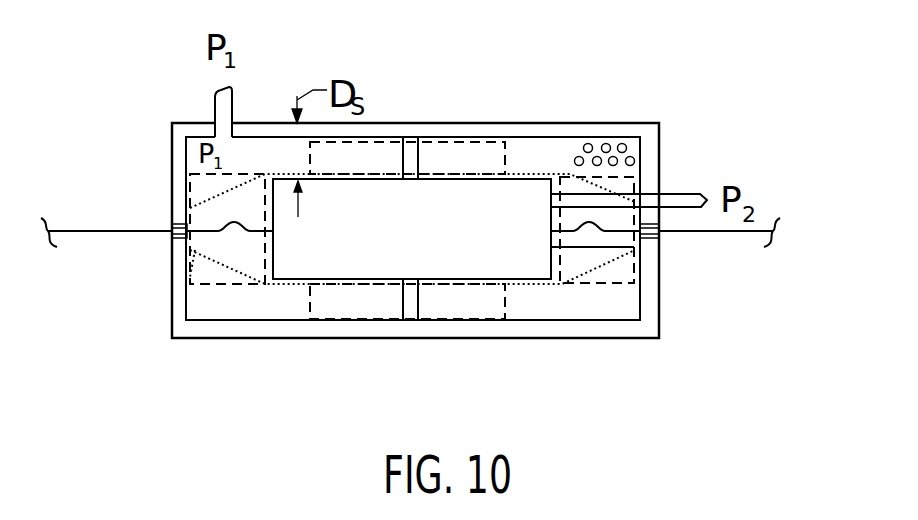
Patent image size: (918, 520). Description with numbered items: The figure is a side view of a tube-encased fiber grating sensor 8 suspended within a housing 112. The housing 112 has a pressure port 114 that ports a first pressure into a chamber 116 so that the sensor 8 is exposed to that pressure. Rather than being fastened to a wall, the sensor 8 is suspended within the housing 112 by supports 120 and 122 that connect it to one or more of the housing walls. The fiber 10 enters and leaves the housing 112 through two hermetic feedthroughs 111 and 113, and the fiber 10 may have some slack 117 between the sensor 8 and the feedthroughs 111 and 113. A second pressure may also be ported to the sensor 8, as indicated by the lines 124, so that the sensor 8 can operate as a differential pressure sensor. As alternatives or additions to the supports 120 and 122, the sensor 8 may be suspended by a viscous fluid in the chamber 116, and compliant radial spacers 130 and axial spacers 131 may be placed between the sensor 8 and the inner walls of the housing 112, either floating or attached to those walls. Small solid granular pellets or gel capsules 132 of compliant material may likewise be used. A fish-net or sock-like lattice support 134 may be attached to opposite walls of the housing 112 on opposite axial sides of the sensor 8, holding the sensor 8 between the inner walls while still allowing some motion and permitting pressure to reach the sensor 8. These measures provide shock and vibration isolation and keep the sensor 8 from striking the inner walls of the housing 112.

The sensor 8 is at (477, 247).
The fiber 10 is at (92, 231).
The hermetic feedthrough 111 is at (158, 233).
The housing 112 is at (163, 107).
The hermetic feedthrough 113 is at (657, 237).
The pressure port 114 is at (228, 110).
The chamber 116 is at (245, 305).
The slack 117 is at (234, 222).
The support 120 is at (592, 247).
The support 122 is at (408, 153).
The lines 124 is at (673, 195).
The radial spacer 130 is at (458, 150).
The axial spacer 131 is at (190, 180).
The pellets or gel capsules 132 is at (624, 146).
The lattice support 134 is at (572, 176).